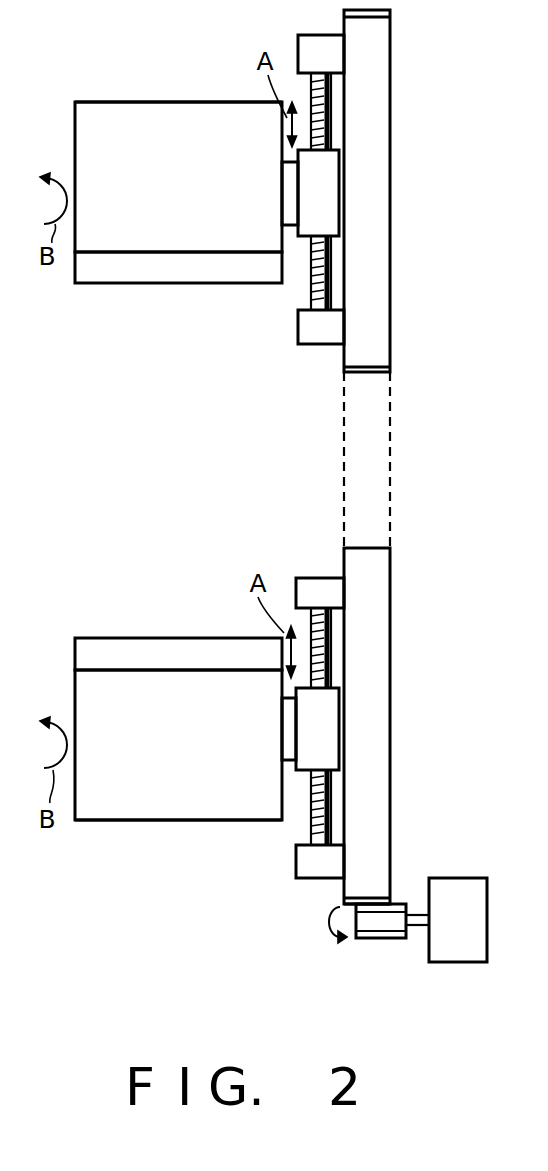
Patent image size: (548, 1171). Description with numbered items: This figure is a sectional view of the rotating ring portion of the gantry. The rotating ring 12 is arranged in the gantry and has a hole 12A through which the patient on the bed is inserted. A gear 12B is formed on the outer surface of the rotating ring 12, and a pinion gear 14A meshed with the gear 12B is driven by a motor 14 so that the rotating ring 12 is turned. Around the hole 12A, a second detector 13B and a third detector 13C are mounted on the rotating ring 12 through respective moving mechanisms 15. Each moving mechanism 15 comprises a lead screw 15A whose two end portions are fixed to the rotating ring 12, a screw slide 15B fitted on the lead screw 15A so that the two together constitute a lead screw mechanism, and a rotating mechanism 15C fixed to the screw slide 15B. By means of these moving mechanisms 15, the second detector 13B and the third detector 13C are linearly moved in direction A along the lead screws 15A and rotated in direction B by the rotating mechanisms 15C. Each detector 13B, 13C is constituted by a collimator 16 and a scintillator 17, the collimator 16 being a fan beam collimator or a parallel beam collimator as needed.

The rotating ring 12 is at (373, 805).
The hole 12A is at (369, 487).
The gear 12B is at (367, 897).
The second detector 13B is at (168, 823).
The third detector 13C is at (208, 100).
The motor 14 is at (458, 946).
The pinion gear 14A is at (378, 939).
The moving mechanism 15 is at (296, 265).
The lead screw 15A is at (298, 300).
The screw slide 15B is at (319, 222).
The rotating mechanism 15C is at (291, 196).
The collimator 16 is at (140, 267).
The scintillator 17 is at (138, 128).